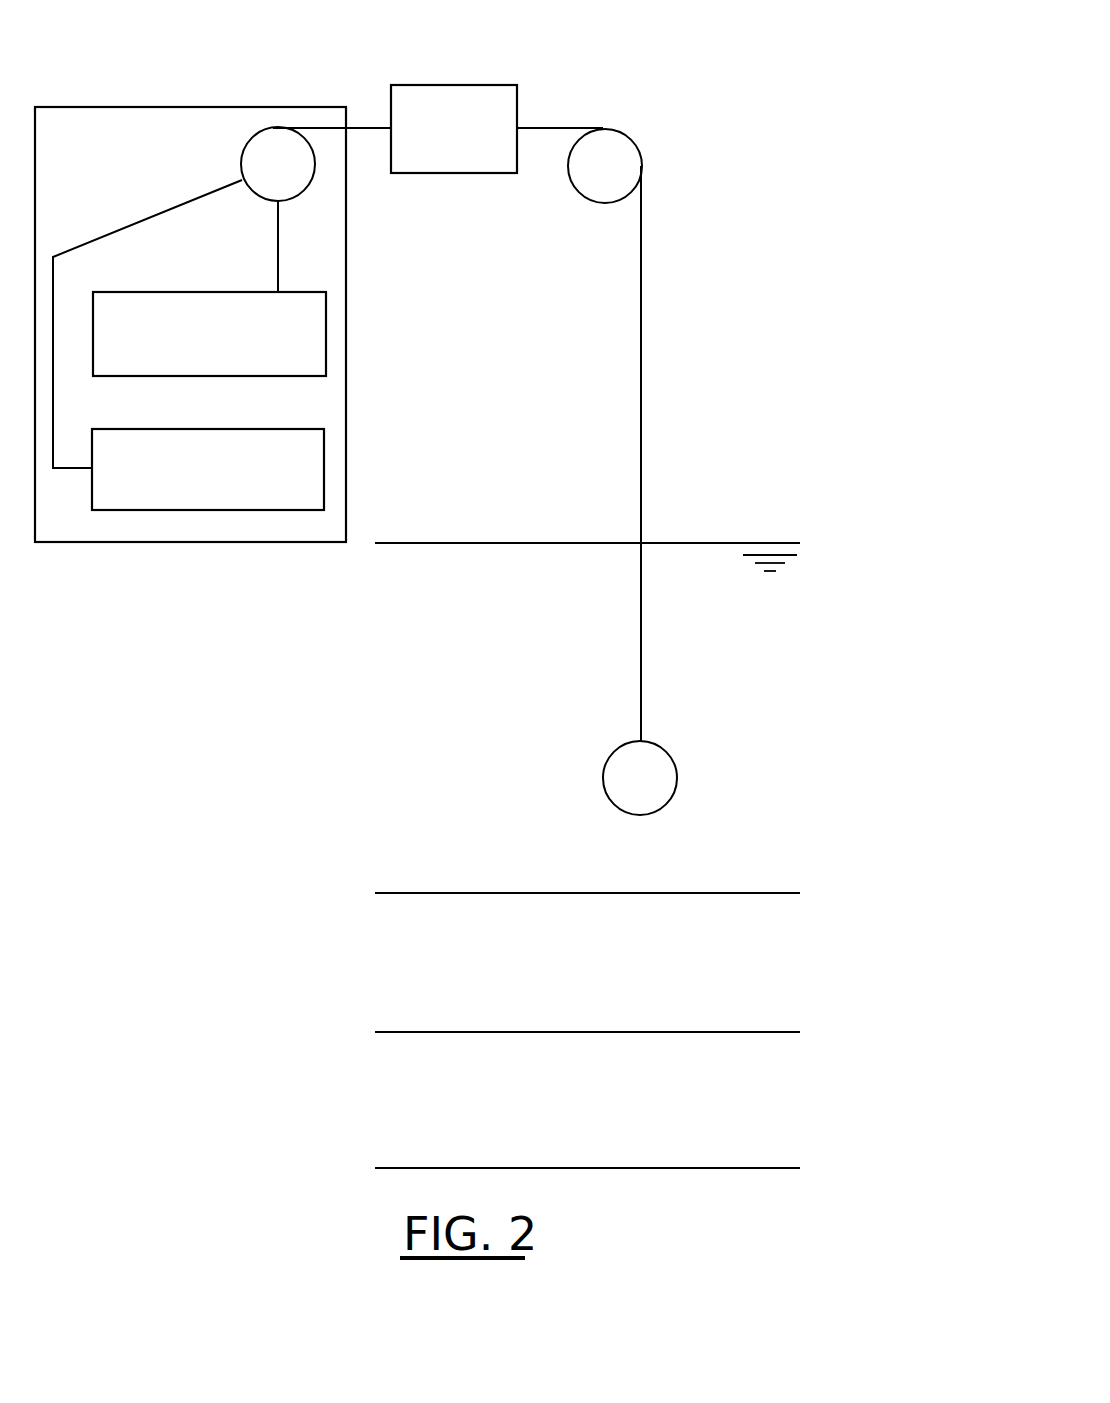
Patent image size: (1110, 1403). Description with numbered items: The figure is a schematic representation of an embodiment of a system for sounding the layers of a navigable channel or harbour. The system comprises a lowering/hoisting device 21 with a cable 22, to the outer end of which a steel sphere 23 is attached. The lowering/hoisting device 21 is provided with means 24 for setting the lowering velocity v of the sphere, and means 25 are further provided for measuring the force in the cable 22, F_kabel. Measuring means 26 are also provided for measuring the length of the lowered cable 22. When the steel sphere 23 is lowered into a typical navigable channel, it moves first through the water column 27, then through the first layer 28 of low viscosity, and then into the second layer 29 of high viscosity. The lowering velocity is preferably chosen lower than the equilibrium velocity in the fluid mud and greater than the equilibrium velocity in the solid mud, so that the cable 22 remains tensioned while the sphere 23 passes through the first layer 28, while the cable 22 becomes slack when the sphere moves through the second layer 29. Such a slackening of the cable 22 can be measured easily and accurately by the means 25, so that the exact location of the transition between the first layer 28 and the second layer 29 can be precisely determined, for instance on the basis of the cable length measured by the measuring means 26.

The lowering/hoisting device 21 is at (247, 53).
The cable 22 is at (641, 268).
The steel sphere 23 is at (620, 764).
The means for setting the lowering velocity 24 is at (313, 326).
The means for measuring the force in the cable 25 is at (308, 468).
The measuring means 26 is at (485, 95).
The water column 27 is at (776, 662).
The first layer 28 is at (776, 945).
The second layer 29 is at (776, 1091).